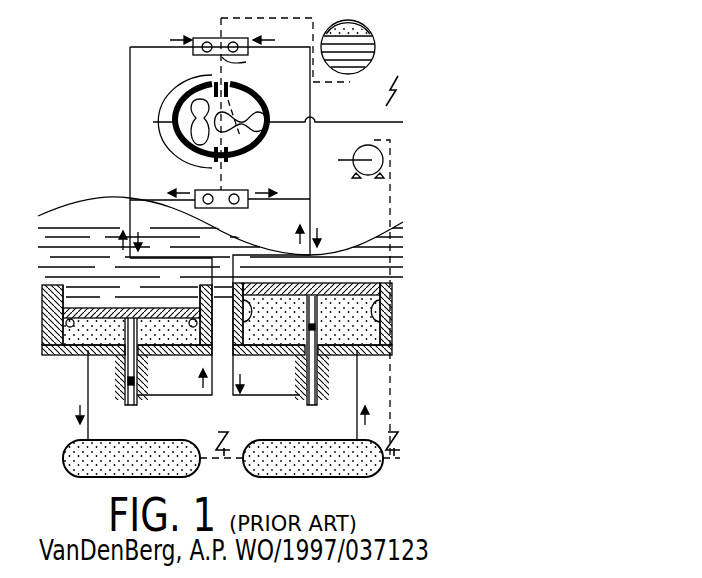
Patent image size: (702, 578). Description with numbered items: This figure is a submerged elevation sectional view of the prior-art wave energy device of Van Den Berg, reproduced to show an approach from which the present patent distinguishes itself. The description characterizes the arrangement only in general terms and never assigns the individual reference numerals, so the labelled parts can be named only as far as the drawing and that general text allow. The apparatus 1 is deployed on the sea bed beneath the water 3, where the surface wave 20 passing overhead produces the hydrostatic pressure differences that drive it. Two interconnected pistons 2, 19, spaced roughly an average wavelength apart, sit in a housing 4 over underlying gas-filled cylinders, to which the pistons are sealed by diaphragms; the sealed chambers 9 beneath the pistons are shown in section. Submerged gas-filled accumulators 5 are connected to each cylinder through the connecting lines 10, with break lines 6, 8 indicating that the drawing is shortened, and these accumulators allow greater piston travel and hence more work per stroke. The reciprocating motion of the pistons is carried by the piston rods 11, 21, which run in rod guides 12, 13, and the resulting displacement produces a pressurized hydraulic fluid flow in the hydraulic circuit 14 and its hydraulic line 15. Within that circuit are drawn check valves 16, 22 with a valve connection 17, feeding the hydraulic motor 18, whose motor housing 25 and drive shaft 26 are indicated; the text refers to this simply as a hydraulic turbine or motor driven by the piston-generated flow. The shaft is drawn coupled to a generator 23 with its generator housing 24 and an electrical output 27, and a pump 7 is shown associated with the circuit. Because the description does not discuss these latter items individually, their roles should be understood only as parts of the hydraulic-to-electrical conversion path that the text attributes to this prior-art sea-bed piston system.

The wave energy converter 1 is at (110, 201).
The piston 2 is at (156, 308).
The water 3 is at (70, 216).
The cylinder housing 4 is at (63, 340).
The buoyancy tank 5 is at (138, 470).
The break line 6 is at (400, 442).
The pump 7 is at (365, 148).
The break line 8 is at (226, 438).
The cylinder chamber 9 is at (128, 326).
The connecting line 10 is at (124, 364).
The piston rod 11 is at (137, 379).
The rod guide 12 is at (118, 392).
The rod guide 13 is at (138, 404).
The hydraulic circuit 14 is at (130, 113).
The hydraulic line 15 is at (132, 200).
The check valve 16 is at (206, 37).
The valve connection 17 is at (249, 69).
The hydraulic motor 18 is at (252, 103).
The piston plate 19 is at (336, 290).
The wave trough 20 is at (347, 245).
The piston rod 21 is at (318, 379).
The check valve 22 is at (236, 190).
The generator 23 is at (362, 54).
The generator housing 24 is at (345, 22).
The motor housing 25 is at (180, 103).
The drive shaft 26 is at (330, 120).
The electrical output 27 is at (386, 120).